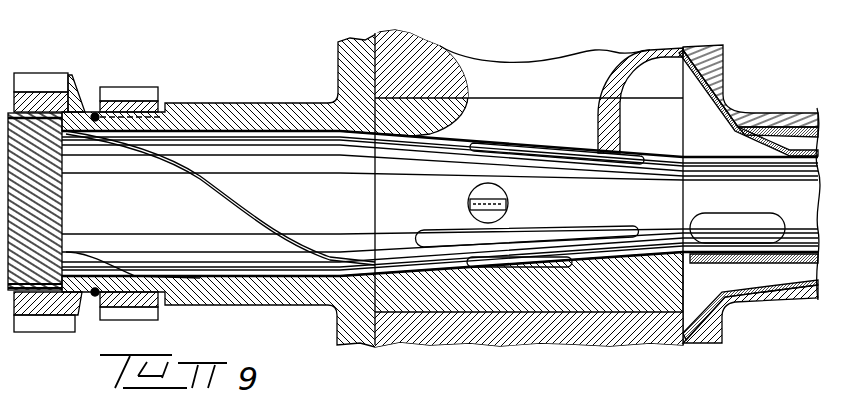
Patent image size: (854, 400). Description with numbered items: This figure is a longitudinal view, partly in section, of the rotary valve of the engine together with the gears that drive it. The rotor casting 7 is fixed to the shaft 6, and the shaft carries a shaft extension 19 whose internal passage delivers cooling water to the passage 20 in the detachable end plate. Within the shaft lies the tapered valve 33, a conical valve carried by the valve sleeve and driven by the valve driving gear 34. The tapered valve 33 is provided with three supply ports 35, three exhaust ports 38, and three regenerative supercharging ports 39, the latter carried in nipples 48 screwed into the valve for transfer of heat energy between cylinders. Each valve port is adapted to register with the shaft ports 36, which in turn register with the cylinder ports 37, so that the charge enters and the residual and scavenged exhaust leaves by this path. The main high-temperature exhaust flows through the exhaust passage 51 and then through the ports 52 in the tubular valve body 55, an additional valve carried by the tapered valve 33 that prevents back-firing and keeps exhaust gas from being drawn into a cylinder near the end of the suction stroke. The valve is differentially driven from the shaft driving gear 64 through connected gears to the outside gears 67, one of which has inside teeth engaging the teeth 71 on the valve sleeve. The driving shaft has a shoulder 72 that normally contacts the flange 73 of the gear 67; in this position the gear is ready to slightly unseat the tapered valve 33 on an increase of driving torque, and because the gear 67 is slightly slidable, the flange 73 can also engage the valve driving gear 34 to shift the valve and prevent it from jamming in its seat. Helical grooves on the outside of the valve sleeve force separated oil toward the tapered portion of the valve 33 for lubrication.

The shaft 6 is at (763, 295).
The rotor casting 7 is at (409, 53).
The shaft extension 19 is at (797, 130).
The passage 20 is at (707, 120).
The tapered valve 33 is at (638, 262).
The valve driving gear 34 is at (50, 223).
The supply ports 35 is at (607, 232).
The shaft ports 36 is at (513, 115).
The cylinder ports 37 is at (557, 67).
The exhaust ports 38 is at (572, 153).
The regenerative supercharging ports 39 is at (480, 212).
The nipples 48 is at (480, 190).
The exhaust passage 51 is at (645, 70).
The ports 52 is at (713, 223).
The tubular valve body 55 is at (800, 248).
The shaft driving gear 64 is at (147, 91).
The outside gears 67 is at (41, 82).
The teeth 71 is at (38, 205).
The shoulder 72 is at (91, 113).
The flange 73 is at (76, 93).